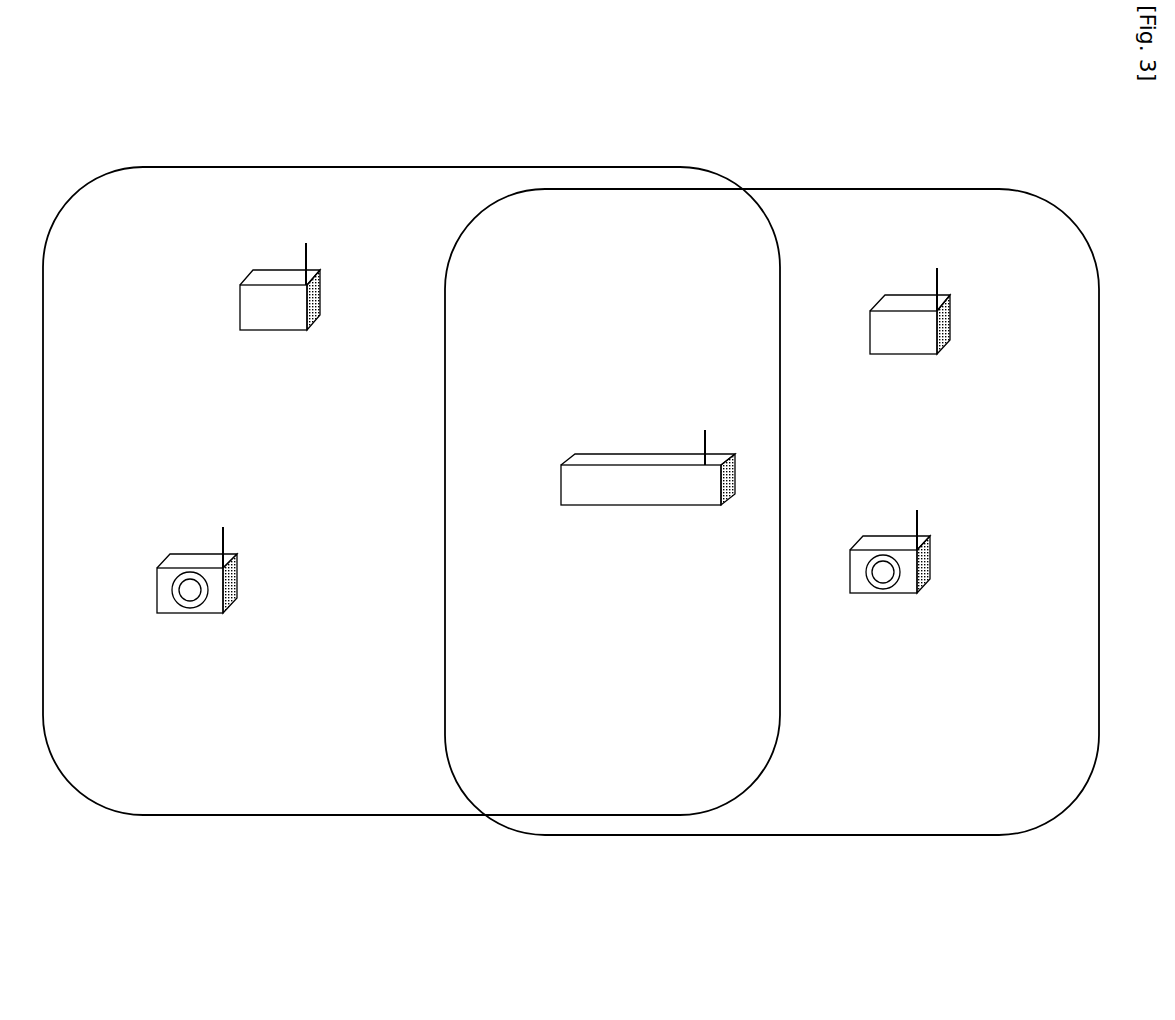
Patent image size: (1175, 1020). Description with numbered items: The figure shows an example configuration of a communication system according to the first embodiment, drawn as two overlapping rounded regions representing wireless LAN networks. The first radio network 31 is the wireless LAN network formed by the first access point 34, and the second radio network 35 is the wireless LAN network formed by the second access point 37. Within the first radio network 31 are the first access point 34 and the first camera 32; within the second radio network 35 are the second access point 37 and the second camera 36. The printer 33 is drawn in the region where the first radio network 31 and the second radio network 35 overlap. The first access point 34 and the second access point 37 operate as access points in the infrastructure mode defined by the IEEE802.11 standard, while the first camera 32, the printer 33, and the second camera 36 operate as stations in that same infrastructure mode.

The first radio network 31 is at (140, 803).
The first camera 32 is at (238, 594).
The printer 33 is at (576, 455).
The first access point 34 is at (312, 297).
The second radio network 35 is at (968, 813).
The second camera 36 is at (931, 576).
The second access point 37 is at (942, 319).